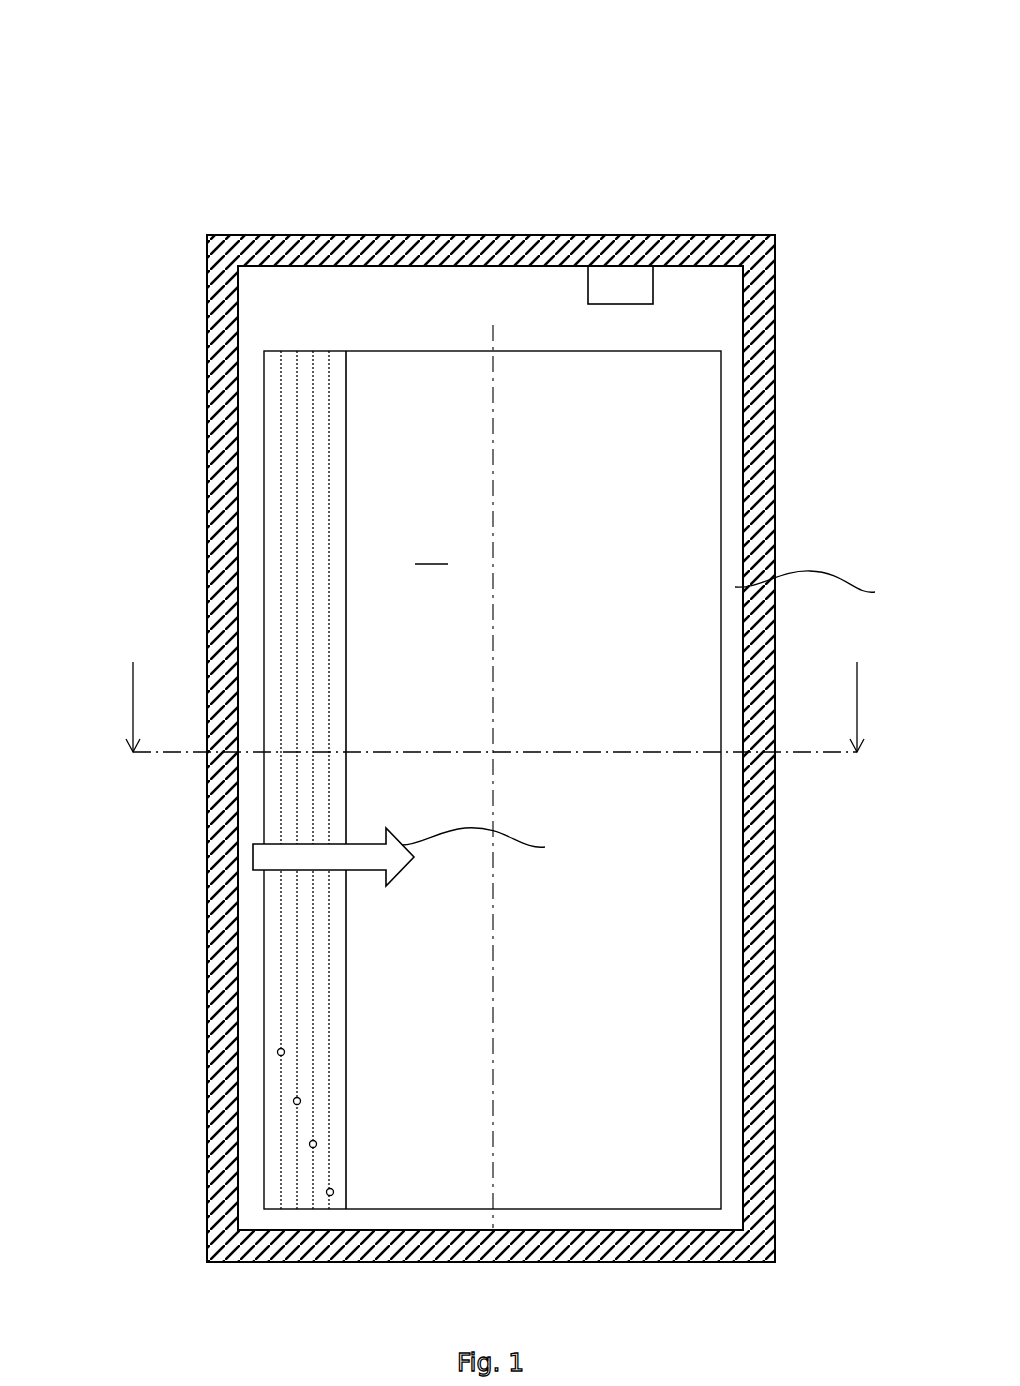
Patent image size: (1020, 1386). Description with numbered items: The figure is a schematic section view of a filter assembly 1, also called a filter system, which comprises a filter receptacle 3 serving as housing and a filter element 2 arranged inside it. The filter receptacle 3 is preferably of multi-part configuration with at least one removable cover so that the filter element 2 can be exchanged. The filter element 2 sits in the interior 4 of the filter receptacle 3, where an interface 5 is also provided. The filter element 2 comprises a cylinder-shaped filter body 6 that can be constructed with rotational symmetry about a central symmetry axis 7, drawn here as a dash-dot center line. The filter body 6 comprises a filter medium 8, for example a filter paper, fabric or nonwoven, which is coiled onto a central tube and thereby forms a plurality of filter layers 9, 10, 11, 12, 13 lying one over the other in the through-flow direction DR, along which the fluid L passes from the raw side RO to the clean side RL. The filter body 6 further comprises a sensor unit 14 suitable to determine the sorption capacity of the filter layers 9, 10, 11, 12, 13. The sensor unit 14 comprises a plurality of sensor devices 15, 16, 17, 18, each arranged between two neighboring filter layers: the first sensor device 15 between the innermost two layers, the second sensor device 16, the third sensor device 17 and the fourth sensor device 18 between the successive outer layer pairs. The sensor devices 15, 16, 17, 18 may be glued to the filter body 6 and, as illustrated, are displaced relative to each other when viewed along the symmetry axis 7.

The filter assembly 1 is at (443, 80).
The filter element 2 is at (324, 283).
The filter receptacle 3 is at (775, 278).
The interior 4 is at (401, 327).
The interface 5 is at (620, 282).
The filter body 6 is at (700, 337).
The symmetry axis 7 is at (493, 978).
The filter medium 8 is at (90, 353).
The filter layer 9 is at (336, 607).
The filter layer 10 is at (322, 558).
The filter layer 11 is at (303, 503).
The filter layer 12 is at (288, 457).
The filter layer 13 is at (270, 419).
The sensor unit 14 is at (90, 975).
The first sensor device 15 is at (326, 1192).
The second sensor device 16 is at (309, 1144).
The third sensor device 17 is at (293, 1101).
The fourth sensor device 18 is at (277, 1052).